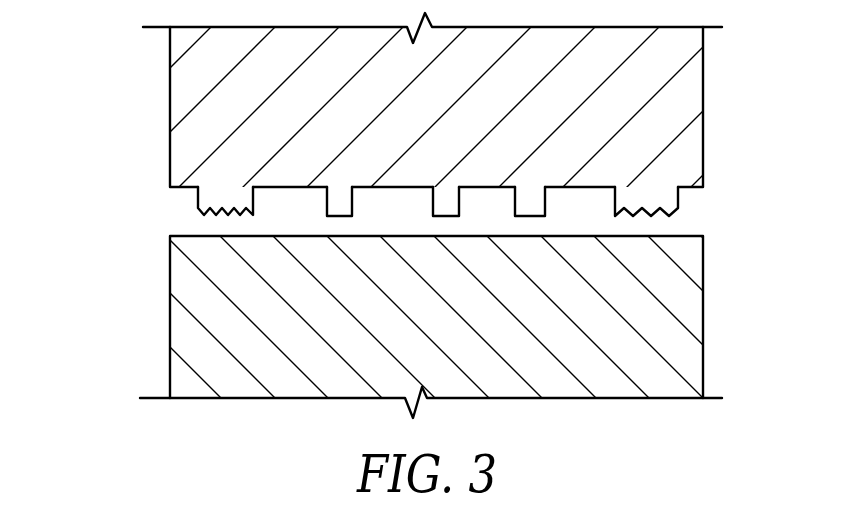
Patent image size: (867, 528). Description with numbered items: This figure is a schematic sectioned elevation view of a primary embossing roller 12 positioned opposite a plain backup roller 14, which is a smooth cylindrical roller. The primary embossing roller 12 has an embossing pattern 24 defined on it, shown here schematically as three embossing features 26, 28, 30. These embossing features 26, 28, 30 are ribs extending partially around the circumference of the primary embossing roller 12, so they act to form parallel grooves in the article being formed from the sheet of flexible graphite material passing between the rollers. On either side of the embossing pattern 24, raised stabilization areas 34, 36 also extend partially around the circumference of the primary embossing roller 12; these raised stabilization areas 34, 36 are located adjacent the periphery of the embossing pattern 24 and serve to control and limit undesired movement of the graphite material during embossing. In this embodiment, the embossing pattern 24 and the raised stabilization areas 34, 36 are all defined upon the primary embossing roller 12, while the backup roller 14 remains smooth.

The primary embossing roller 12 is at (692, 83).
The backup roller 14 is at (687, 300).
The embossing pattern 24 is at (284, 285).
The embossing feature 26 is at (334, 207).
The embossing feature 28 is at (449, 207).
The embossing feature 30 is at (528, 207).
The raised stabilization area 34 is at (677, 199).
The raised stabilization area 36 is at (212, 204).